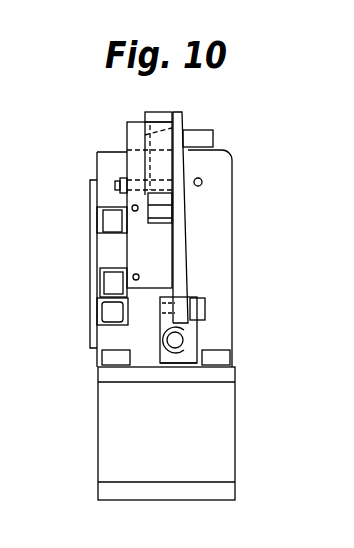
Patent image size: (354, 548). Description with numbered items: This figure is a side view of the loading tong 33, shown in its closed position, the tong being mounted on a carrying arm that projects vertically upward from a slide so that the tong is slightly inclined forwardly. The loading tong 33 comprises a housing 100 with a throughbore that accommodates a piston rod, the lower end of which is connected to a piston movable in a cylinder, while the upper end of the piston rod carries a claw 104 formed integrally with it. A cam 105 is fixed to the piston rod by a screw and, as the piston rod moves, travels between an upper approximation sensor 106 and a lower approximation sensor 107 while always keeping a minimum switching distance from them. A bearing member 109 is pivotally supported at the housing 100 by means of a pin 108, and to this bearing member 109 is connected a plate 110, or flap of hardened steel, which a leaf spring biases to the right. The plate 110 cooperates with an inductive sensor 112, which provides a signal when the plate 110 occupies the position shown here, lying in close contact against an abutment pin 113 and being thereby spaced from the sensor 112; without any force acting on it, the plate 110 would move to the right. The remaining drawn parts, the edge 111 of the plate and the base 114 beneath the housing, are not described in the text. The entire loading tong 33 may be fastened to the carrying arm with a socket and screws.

The loading tong 33 is at (243, 170).
The housing 100 is at (222, 202).
The claw 104 is at (203, 128).
The cam 105 is at (108, 282).
The upper approximation sensor 106 is at (105, 218).
The lower approximation sensor 107 is at (108, 312).
The pin 108 is at (185, 339).
The bearing member 109 is at (187, 358).
The plate 110 is at (187, 283).
The plate edge 111 is at (178, 253).
The sensor 112 is at (157, 216).
The abutment pin 113 is at (130, 183).
The base 114 is at (228, 488).